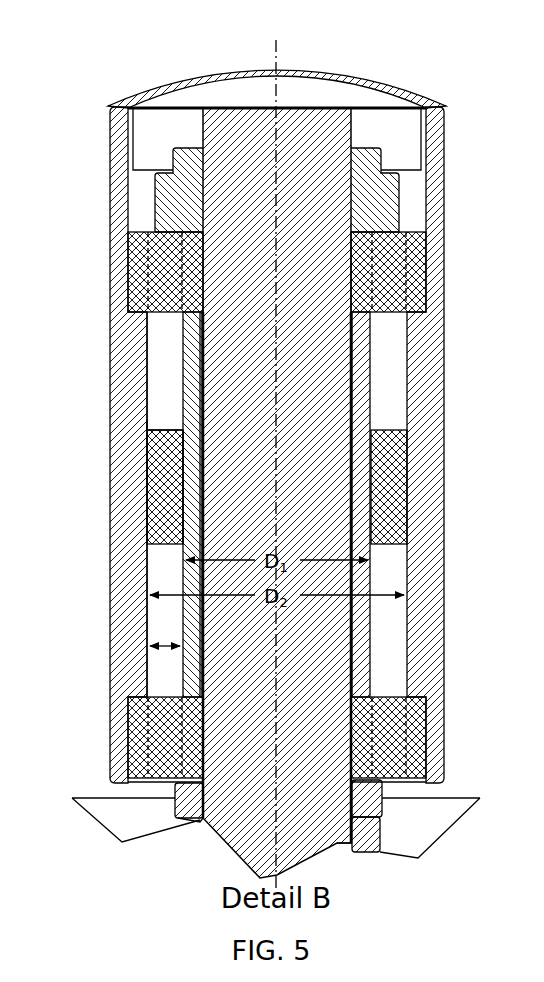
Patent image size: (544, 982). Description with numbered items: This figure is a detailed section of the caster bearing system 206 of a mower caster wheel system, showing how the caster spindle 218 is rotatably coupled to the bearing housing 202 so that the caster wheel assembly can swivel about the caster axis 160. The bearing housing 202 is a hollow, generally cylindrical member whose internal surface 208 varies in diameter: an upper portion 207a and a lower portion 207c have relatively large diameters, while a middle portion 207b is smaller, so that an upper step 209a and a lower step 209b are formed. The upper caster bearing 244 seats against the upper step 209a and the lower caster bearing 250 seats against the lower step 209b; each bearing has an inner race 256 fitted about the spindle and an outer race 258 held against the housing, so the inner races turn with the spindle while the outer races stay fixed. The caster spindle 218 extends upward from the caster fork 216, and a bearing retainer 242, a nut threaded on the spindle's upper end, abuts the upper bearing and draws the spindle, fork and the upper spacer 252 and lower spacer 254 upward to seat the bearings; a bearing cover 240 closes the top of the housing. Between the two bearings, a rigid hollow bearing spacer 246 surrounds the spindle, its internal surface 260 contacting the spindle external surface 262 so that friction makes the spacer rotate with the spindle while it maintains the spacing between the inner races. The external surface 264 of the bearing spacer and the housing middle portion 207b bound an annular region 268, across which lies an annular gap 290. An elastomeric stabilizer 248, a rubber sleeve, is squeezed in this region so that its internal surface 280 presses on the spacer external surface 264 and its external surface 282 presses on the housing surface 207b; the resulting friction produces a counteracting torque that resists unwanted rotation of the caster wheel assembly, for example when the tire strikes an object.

The caster axis 160 is at (283, 58).
The bearing housing 202 is at (448, 142).
The caster bearing system 206 is at (152, 192).
The upper portion of internal surface 207a is at (132, 213).
The middle portion of internal surface 207b is at (92, 414).
The lower portion of internal surface 207c is at (130, 767).
The internal surface 208 is at (150, 427).
The upper step 209a is at (133, 308).
The lower step 209b is at (135, 692).
The caster fork 216 is at (90, 797).
The caster spindle 218 is at (237, 138).
The bearing cover 240 is at (143, 94).
The bearing retainer 242 is at (402, 198).
The upper caster bearing 244 is at (420, 272).
The bearing spacer 246 is at (368, 352).
The stabilizer 248 is at (410, 482).
The lower caster bearing 250 is at (430, 746).
The upper spacer 252 is at (384, 808).
The lower spacer 254 is at (384, 833).
The inner race 256 is at (183, 265).
The outer race 258 is at (130, 270).
The internal surface of bearing spacer 260 is at (206, 325).
The external surface of caster spindle 262 is at (198, 346).
The external surface of bearing spacer 264 is at (181, 325).
The annular region 268 is at (151, 368).
The stabilizer internal surface 280 is at (187, 466).
The stabilizer external surface 282 is at (143, 466).
The annular gap 290 is at (166, 642).